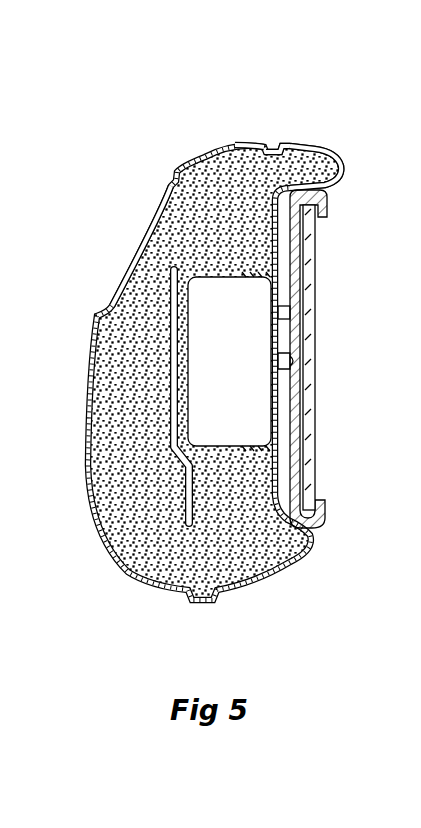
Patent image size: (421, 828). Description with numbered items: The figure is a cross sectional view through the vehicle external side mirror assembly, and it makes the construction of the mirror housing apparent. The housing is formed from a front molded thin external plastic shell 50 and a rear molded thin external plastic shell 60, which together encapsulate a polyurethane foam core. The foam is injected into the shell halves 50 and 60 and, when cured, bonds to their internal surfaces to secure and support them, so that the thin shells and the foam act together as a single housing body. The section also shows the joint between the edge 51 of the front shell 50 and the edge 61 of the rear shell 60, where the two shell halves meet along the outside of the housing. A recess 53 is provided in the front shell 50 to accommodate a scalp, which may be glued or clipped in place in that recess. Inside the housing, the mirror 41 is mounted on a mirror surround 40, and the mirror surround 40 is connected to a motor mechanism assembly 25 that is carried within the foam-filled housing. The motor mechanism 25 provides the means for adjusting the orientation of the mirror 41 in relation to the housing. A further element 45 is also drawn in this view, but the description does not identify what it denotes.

The front molded thin external plastic shell 50 is at (86, 505).
The recess 53 is at (140, 237).
The edge of the front shell 51 is at (258, 132).
The edge of the rear shell 61 is at (288, 132).
The rear molded thin external plastic shell 60 is at (334, 165).
The support rib 45 is at (173, 367).
The motor mechanism assembly 25 is at (208, 305).
The mirror surround 40 is at (320, 530).
The mirror 41 is at (316, 358).